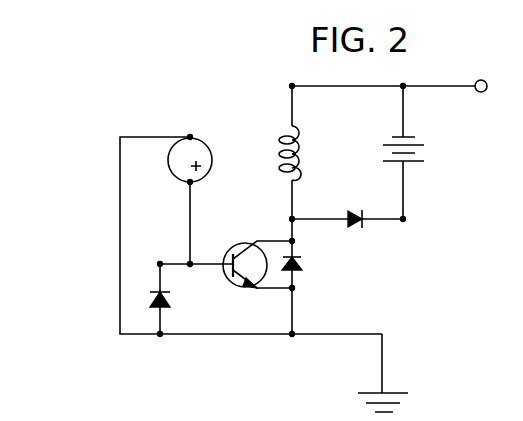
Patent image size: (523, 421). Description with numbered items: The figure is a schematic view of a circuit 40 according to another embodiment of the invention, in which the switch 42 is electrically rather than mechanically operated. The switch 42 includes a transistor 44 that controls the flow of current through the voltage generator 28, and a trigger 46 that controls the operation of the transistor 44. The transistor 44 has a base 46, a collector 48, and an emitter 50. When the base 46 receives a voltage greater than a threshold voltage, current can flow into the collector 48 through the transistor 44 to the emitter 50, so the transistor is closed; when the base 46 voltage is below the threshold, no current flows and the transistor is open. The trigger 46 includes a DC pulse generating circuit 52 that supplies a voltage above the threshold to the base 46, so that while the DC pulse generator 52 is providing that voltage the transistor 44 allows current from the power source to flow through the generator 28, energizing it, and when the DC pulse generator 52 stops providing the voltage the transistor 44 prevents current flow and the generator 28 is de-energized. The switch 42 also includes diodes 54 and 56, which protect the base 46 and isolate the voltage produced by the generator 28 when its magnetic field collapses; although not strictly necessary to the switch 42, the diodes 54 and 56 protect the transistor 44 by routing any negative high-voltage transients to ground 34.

The circuit 40 is at (220, 114).
The voltage generator 28 is at (279, 124).
The switch 42 is at (105, 198).
The transistor 44 is at (237, 225).
The base 46 is at (222, 266).
The collector 48 is at (293, 248).
The emitter 50 is at (246, 290).
The DC pulse generating circuit 52 is at (176, 176).
The diode 54 is at (150, 300).
The diode 56 is at (301, 268).
The ground 34 is at (396, 393).